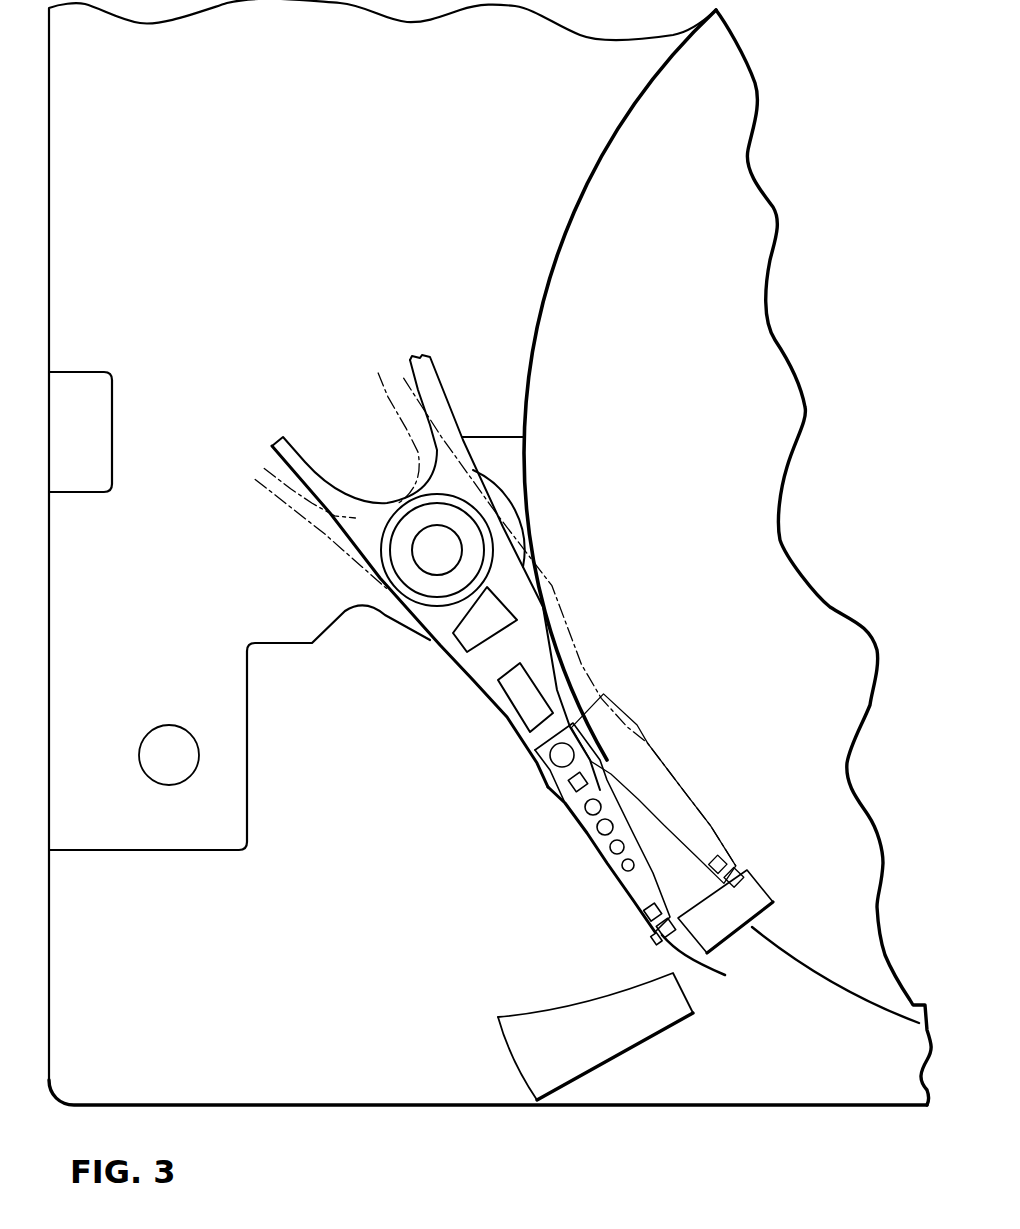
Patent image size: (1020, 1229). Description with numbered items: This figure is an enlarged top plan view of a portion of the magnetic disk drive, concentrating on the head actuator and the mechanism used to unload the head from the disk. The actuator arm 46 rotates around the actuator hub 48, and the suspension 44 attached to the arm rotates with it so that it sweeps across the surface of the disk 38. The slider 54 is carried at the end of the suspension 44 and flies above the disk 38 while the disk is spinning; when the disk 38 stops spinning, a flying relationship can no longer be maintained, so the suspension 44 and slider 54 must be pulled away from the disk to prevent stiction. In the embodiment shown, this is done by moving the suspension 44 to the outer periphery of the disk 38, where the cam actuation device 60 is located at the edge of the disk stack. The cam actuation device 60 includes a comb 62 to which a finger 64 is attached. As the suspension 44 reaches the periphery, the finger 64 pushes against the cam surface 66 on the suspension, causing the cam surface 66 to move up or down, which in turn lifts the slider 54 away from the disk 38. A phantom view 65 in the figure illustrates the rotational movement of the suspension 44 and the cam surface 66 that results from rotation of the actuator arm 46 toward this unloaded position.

The disk 38 is at (677, 452).
The suspension 44 is at (593, 840).
The actuator arm 46 is at (470, 680).
The actuator hub 48 is at (433, 530).
The slider 54 is at (650, 917).
The cam actuation device 60 is at (565, 1036).
The comb 62 is at (660, 1028).
The finger 64 is at (748, 872).
The phantom view 65 is at (676, 789).
The cam surface 66 is at (707, 968).